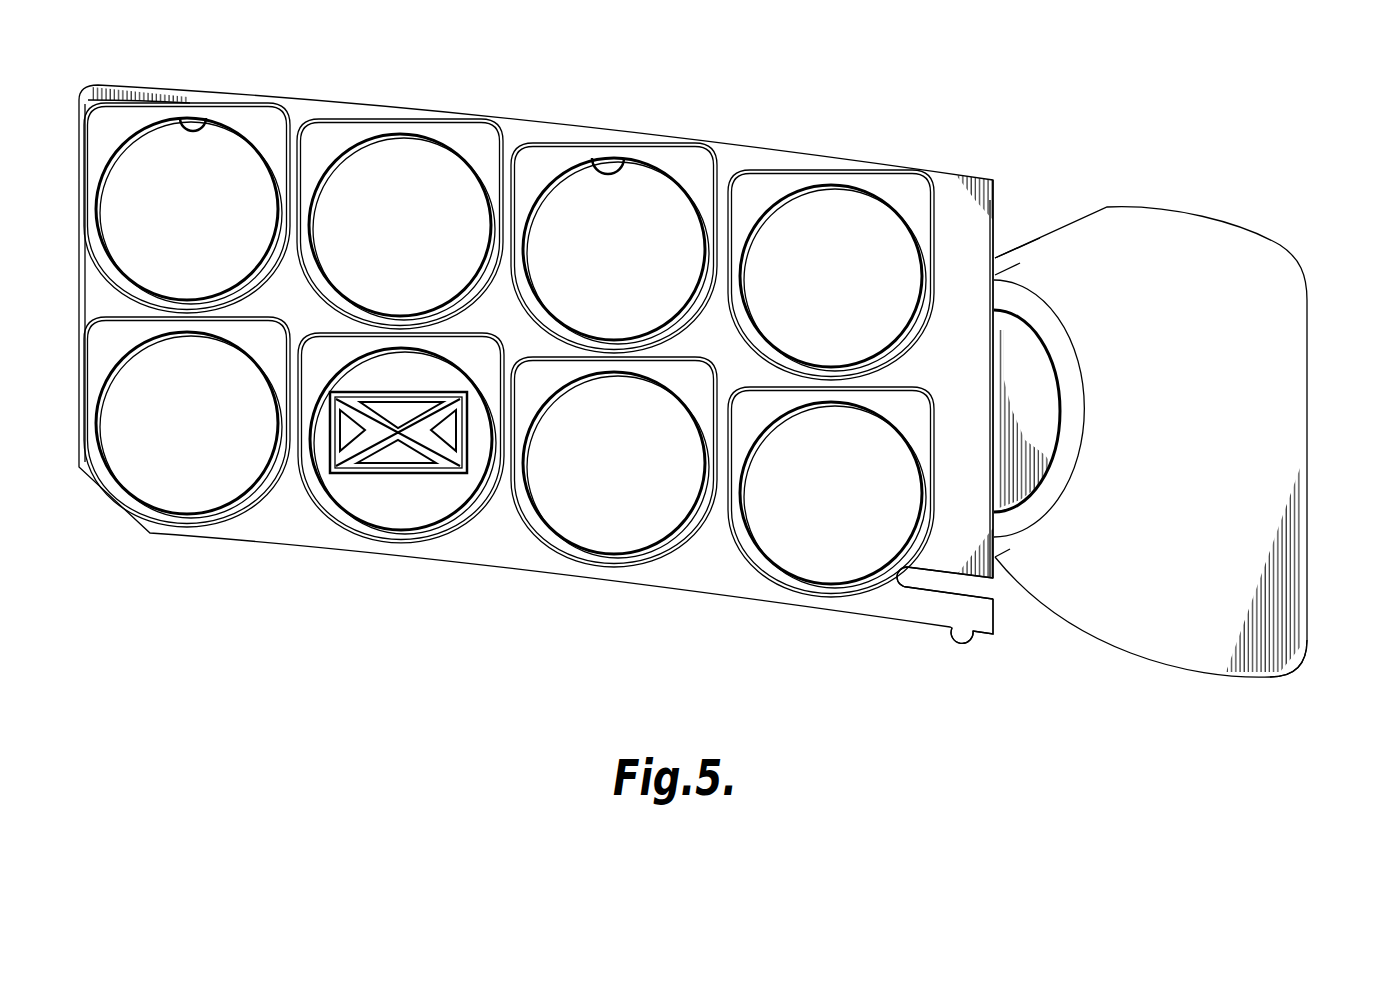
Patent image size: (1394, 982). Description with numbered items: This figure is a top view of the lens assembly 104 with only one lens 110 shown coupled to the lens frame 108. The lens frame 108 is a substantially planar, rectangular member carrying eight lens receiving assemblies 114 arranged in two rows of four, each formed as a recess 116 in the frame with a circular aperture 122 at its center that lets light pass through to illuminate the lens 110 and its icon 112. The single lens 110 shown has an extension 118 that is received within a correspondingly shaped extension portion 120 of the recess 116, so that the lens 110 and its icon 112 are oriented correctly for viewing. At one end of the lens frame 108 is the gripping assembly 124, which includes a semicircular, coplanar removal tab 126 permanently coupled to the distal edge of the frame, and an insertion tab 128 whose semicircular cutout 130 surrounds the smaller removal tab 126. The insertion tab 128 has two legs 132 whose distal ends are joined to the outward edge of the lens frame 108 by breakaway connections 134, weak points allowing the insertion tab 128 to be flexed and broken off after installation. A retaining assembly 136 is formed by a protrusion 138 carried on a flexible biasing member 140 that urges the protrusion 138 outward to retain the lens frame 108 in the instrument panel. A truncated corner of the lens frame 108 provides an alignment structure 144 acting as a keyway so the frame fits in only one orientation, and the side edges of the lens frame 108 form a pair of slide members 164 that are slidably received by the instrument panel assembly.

The lens assembly 104 is at (976, 118).
The lens frame 108 is at (927, 175).
The lens 110 is at (363, 493).
The icon 112 is at (413, 467).
The lens receiving assembly 114 is at (470, 130).
The recess 116 is at (110, 118).
The extension 118 is at (313, 357).
The extension portion 120 is at (322, 143).
The aperture 122 is at (208, 120).
The gripping assembly 124 is at (1204, 197).
The removal tab 126 is at (1007, 477).
The insertion tab 128 is at (1247, 647).
The semicircular cutout 130 is at (1078, 400).
The leg 132 is at (1042, 260).
The breakaway connection 134 is at (1003, 270).
The retaining assembly 136 is at (983, 668).
The protrusion 138 is at (962, 644).
The biasing member 140 is at (957, 608).
The alignment structure 144 is at (108, 500).
The slide member 164 is at (567, 120).